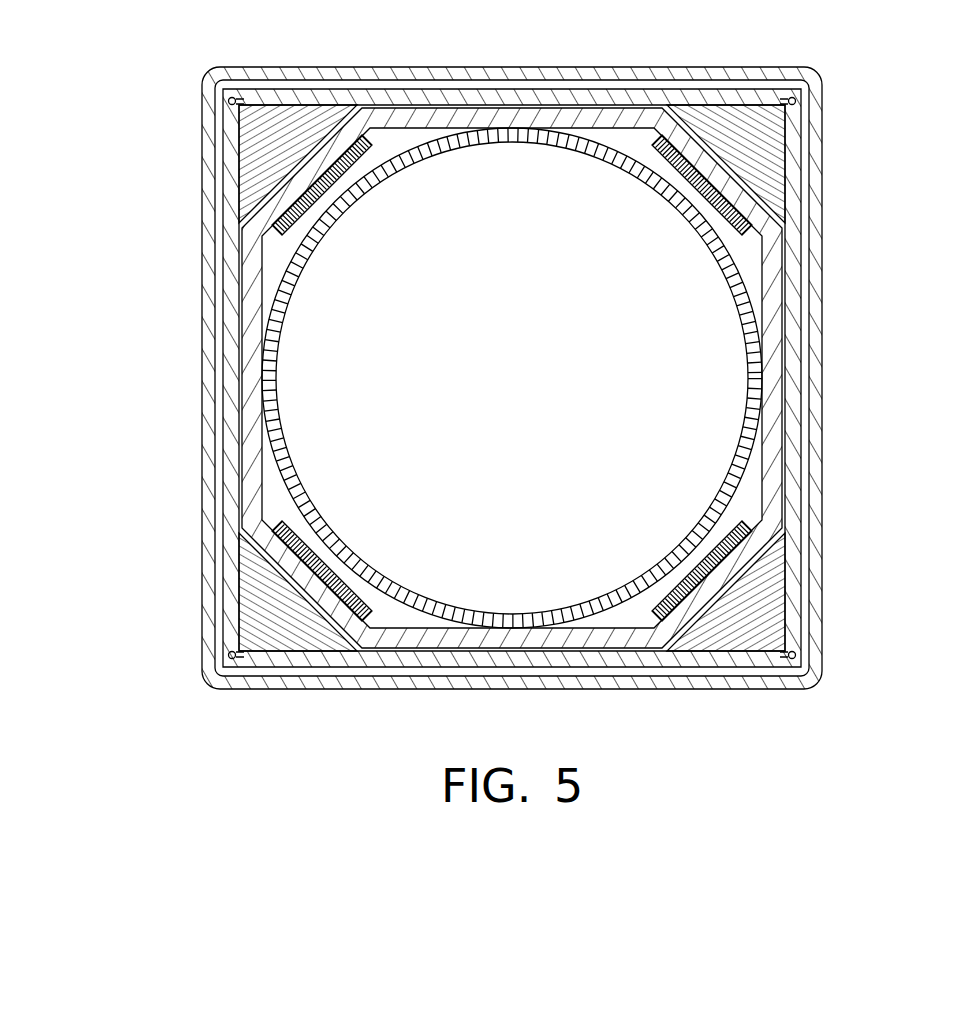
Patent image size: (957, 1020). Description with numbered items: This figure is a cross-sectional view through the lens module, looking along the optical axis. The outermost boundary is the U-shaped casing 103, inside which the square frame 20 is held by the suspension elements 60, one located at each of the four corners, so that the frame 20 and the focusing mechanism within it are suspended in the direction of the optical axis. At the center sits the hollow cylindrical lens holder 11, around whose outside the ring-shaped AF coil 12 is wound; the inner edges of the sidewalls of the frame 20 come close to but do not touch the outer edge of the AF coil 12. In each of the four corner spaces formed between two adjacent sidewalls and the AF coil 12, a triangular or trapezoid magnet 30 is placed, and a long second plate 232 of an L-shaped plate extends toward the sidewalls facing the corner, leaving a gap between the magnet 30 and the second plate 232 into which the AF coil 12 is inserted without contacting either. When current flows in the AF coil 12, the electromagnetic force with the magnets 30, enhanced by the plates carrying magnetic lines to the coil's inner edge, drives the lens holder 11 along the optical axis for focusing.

The casing 103 is at (818, 198).
The frame 20 is at (795, 261).
The AF coil 12 is at (772, 316).
The lens holder 11 is at (763, 372).
The magnet 30 is at (265, 148).
The second plate 232 is at (327, 190).
The suspension element 60 is at (229, 102).